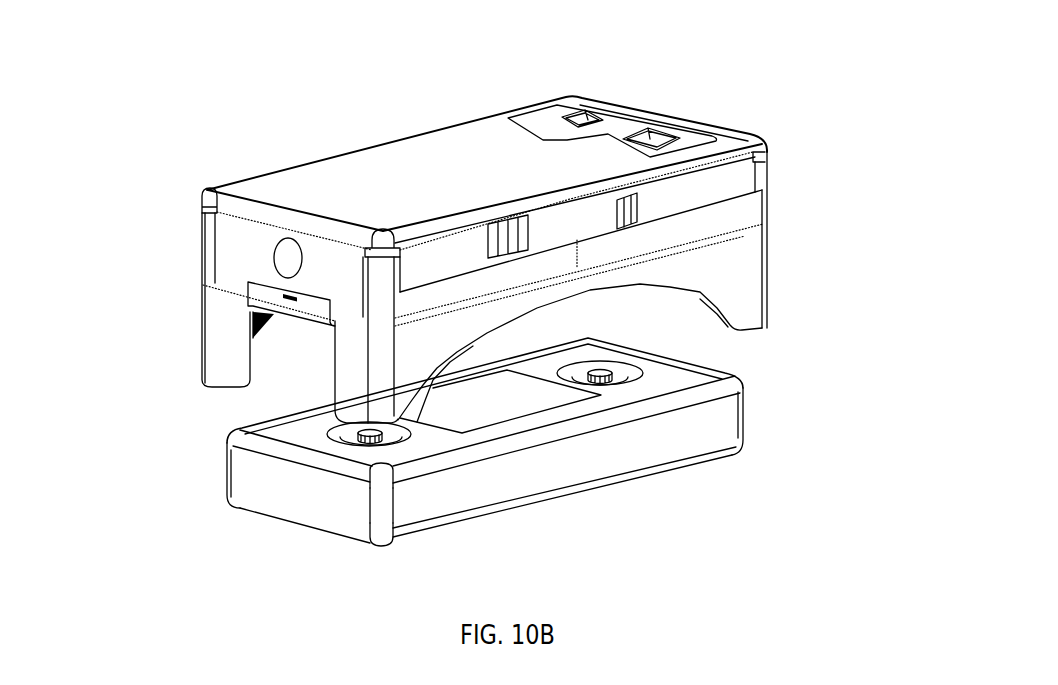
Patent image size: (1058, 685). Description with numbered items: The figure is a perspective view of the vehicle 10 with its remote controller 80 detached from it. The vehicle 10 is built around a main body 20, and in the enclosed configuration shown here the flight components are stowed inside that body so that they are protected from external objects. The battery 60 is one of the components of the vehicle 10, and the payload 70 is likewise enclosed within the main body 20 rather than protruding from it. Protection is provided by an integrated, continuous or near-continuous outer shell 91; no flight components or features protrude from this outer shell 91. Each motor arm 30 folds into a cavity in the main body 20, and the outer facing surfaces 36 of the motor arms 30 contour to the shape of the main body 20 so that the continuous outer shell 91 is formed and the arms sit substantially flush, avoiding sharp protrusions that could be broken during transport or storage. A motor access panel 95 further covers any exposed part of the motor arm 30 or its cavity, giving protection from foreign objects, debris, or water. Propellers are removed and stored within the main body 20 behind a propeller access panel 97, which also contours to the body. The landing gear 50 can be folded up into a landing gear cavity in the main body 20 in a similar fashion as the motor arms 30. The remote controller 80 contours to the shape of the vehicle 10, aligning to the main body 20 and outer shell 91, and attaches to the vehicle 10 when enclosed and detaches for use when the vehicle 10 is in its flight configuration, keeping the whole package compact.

The vehicle 10 is at (160, 82).
The main body 20 is at (370, 167).
The battery 60 is at (617, 130).
The payload 70 is at (290, 253).
The propeller access panel 97 is at (273, 295).
The outer shell 91 is at (703, 187).
The outer facing surfaces 36 is at (735, 207).
The motor arm 30 is at (690, 227).
The motor access panel 95 is at (582, 228).
The landing gear 50 is at (732, 285).
The remote controller 80 is at (677, 442).